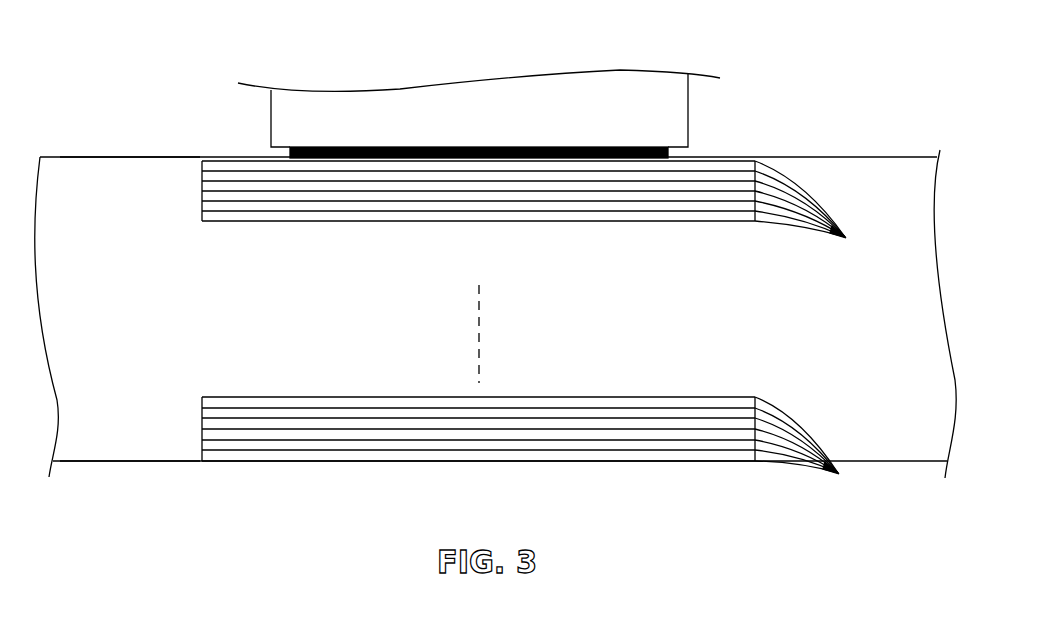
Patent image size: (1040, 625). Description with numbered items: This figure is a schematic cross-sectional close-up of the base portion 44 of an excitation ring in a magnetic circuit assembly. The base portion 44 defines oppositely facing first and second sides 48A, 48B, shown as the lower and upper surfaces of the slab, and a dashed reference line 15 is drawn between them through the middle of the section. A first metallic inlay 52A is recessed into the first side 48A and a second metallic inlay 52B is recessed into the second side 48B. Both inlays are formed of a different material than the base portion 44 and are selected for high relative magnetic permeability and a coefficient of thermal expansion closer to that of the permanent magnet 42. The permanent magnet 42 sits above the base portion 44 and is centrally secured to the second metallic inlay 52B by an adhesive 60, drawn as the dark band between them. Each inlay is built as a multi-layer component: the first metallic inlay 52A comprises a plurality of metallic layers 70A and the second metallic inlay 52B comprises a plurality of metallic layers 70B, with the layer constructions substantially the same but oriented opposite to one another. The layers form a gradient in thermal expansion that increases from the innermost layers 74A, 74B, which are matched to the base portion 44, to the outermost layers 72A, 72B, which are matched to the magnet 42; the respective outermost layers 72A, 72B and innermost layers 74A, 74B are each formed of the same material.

The centerline 15 is at (480, 340).
The permanent magnet 42 is at (563, 97).
The base portion 44 is at (883, 405).
The first side 48A is at (152, 472).
The second side 48B is at (69, 150).
The first metallic inlay 52A is at (418, 434).
The second metallic inlay 52B is at (438, 204).
The adhesive 60 is at (437, 147).
The plurality of metallic layers 70A is at (822, 451).
The plurality of metallic layers 70B is at (825, 213).
The outermost layer 72A is at (202, 458).
The outermost layer 72B is at (212, 162).
The innermost layer 74A is at (202, 405).
The innermost layer 74B is at (205, 221).